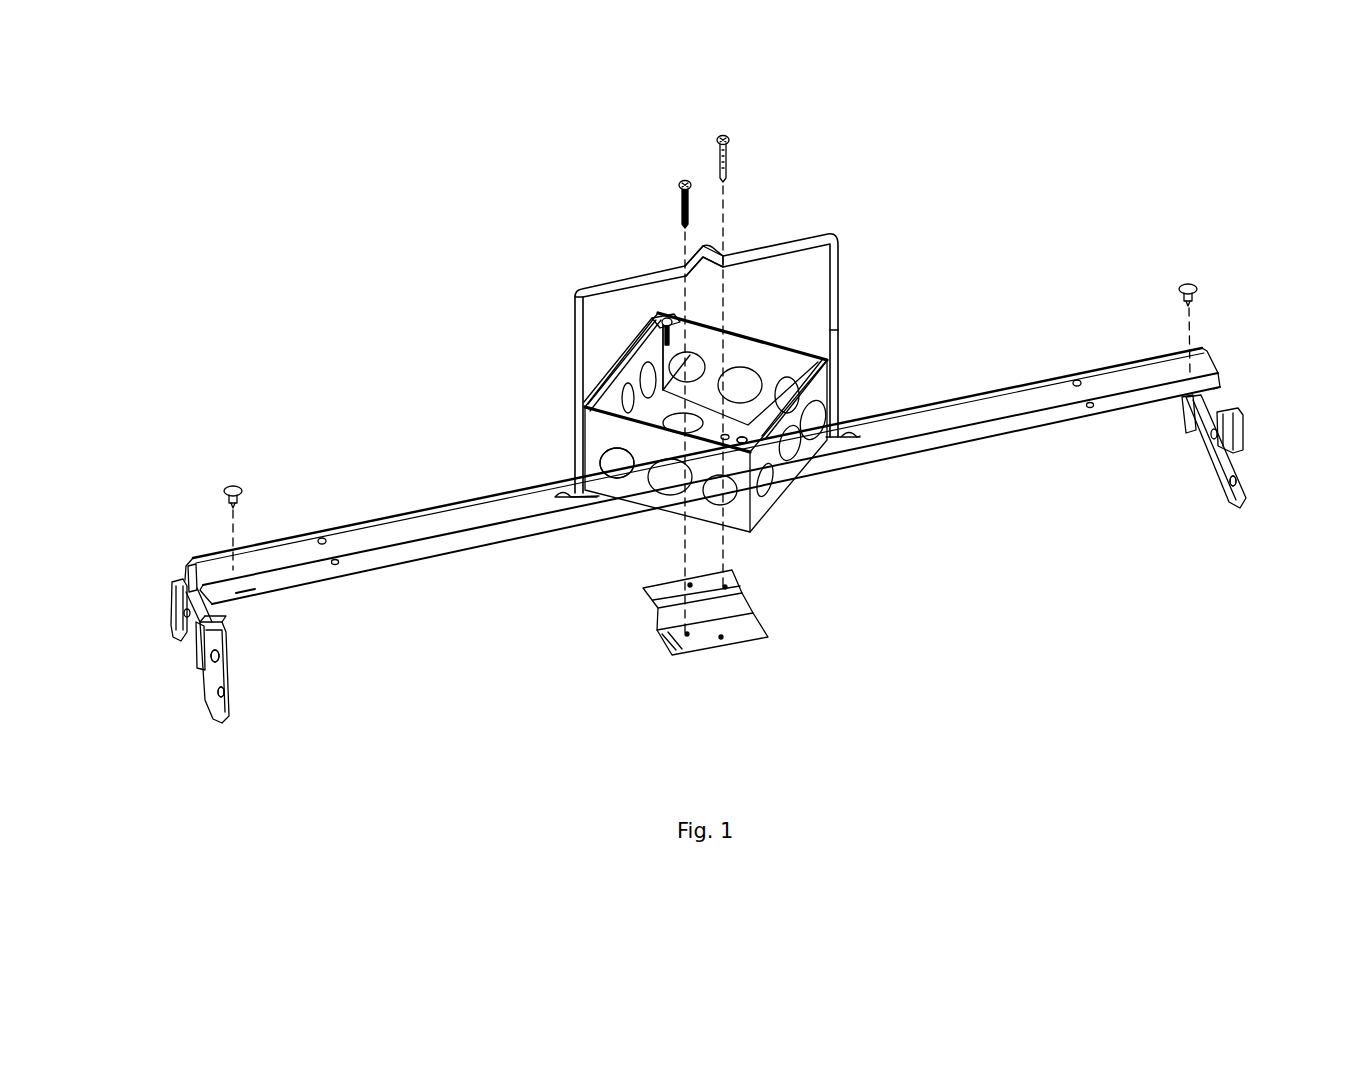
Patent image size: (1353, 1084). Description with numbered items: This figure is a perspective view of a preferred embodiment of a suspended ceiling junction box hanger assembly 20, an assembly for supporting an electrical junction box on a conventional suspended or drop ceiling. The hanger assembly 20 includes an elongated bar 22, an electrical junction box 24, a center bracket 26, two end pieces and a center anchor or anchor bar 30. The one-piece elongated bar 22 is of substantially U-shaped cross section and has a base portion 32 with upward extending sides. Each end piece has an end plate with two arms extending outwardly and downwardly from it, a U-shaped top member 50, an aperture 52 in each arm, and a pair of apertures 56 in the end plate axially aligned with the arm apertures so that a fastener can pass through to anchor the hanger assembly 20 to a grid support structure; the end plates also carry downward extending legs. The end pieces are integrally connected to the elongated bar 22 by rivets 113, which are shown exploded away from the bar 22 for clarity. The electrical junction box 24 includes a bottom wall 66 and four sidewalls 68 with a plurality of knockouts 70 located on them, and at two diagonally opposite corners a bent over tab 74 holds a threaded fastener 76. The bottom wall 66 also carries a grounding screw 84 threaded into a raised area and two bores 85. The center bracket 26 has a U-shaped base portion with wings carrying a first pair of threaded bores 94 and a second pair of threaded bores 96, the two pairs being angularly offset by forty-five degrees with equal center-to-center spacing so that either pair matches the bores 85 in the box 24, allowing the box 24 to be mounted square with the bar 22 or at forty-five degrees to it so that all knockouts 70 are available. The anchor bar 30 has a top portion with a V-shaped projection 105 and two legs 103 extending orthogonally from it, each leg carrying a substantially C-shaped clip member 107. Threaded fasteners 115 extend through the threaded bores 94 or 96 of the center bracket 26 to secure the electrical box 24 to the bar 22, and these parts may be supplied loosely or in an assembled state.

The junction box hanger assembly 20 is at (348, 236).
The elongated bar 22 is at (985, 452).
The electrical junction box 24 is at (772, 506).
The center bracket 26 is at (750, 641).
The anchor bar 30 is at (815, 236).
The base portion 32 is at (193, 560).
The U-shaped top member 50 is at (243, 594).
The aperture 52 is at (197, 669).
The aperture 56 is at (226, 654).
The bottom wall 66 is at (760, 438).
The sidewall 68 is at (785, 376).
The knockout 70 is at (617, 468).
The bent over tab 74 is at (661, 322).
The threaded fastener 76 is at (646, 334).
The grounding screw 84 is at (727, 586).
The bore 85 is at (727, 434).
The threaded bore 94 is at (688, 636).
The threaded bore 96 is at (690, 583).
The leg 103 is at (838, 332).
The V-shaped projection 105 is at (713, 248).
The clip member 107 is at (560, 492).
The rivet 113 is at (228, 484).
The threaded fastener 115 is at (680, 208).